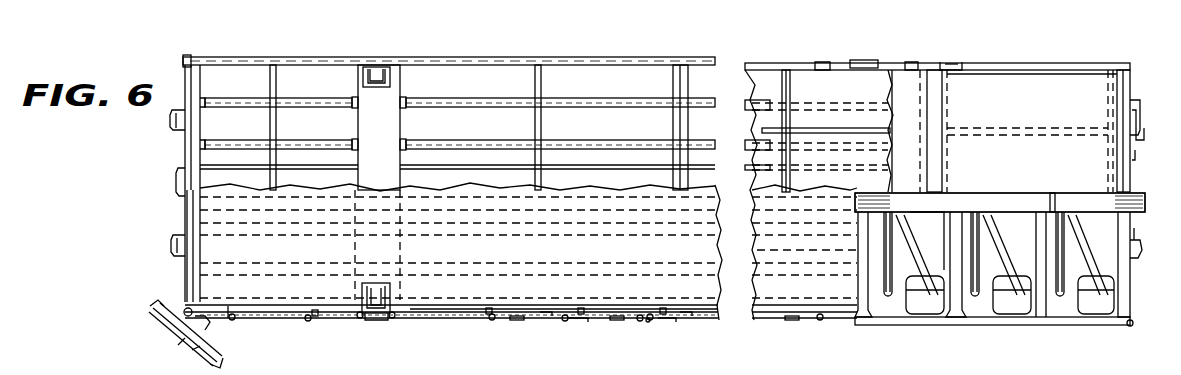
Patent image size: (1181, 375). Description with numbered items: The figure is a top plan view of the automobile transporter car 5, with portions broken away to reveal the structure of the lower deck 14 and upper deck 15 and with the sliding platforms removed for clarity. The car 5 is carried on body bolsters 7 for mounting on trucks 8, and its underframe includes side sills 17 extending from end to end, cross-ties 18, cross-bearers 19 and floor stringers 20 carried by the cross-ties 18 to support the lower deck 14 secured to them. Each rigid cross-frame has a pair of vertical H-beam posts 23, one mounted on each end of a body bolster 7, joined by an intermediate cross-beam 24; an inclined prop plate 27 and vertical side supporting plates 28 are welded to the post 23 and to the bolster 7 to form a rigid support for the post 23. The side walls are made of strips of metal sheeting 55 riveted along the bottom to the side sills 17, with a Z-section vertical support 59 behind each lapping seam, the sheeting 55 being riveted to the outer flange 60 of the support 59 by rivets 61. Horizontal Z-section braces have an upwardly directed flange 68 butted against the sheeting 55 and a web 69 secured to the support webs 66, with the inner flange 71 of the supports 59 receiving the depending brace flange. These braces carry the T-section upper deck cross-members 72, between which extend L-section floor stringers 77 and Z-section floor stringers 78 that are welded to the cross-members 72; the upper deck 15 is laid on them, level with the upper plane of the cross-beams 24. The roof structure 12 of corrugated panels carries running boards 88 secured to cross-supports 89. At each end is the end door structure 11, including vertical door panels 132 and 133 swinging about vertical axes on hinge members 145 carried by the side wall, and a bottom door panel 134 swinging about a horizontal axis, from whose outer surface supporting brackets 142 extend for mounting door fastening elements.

The automobile transporter car 5 is at (1132, 180).
The body bolster 7 is at (402, 127).
The truck 8 is at (410, 362).
The end door structure 11 is at (186, 217).
The roof structure 12 is at (895, 310).
The lower deck 14 is at (452, 298).
The upper deck 15 is at (882, 157).
The side sill 17 is at (306, 62).
The cross-tie 18 is at (268, 80).
The cross-bearer 19 is at (673, 80).
The floor stringer 20 is at (648, 108).
The vertical H-beam post 23 is at (375, 321).
The intermediate cross-beam 24 is at (935, 160).
The inclined stiffener or prop plate 27 is at (375, 282).
The side supporting plate 28 is at (358, 320).
The metal sheeting 55 is at (520, 321).
The Z-section vertical support 59 is at (230, 310).
The outer flange 60 is at (309, 321).
The rivets 61 is at (649, 323).
The web 66 is at (578, 320).
The upwardly directed flange 68 is at (512, 310).
The web of brace 69 is at (548, 310).
The inner flange 71 is at (313, 308).
The upper deck cross-member 72 is at (791, 85).
The L-section floor stringer 77 is at (866, 124).
The Z-section floor stringer 78 is at (806, 244).
The running board 88 is at (250, 374).
The cross-support 89 is at (988, 182).
The vertical door panel 132 is at (170, 335).
The vertical door panel 133 is at (208, 320).
The bottom door panel 134 is at (187, 268).
The supporting bracket 142 is at (168, 121).
The hinge member 145 is at (184, 310).